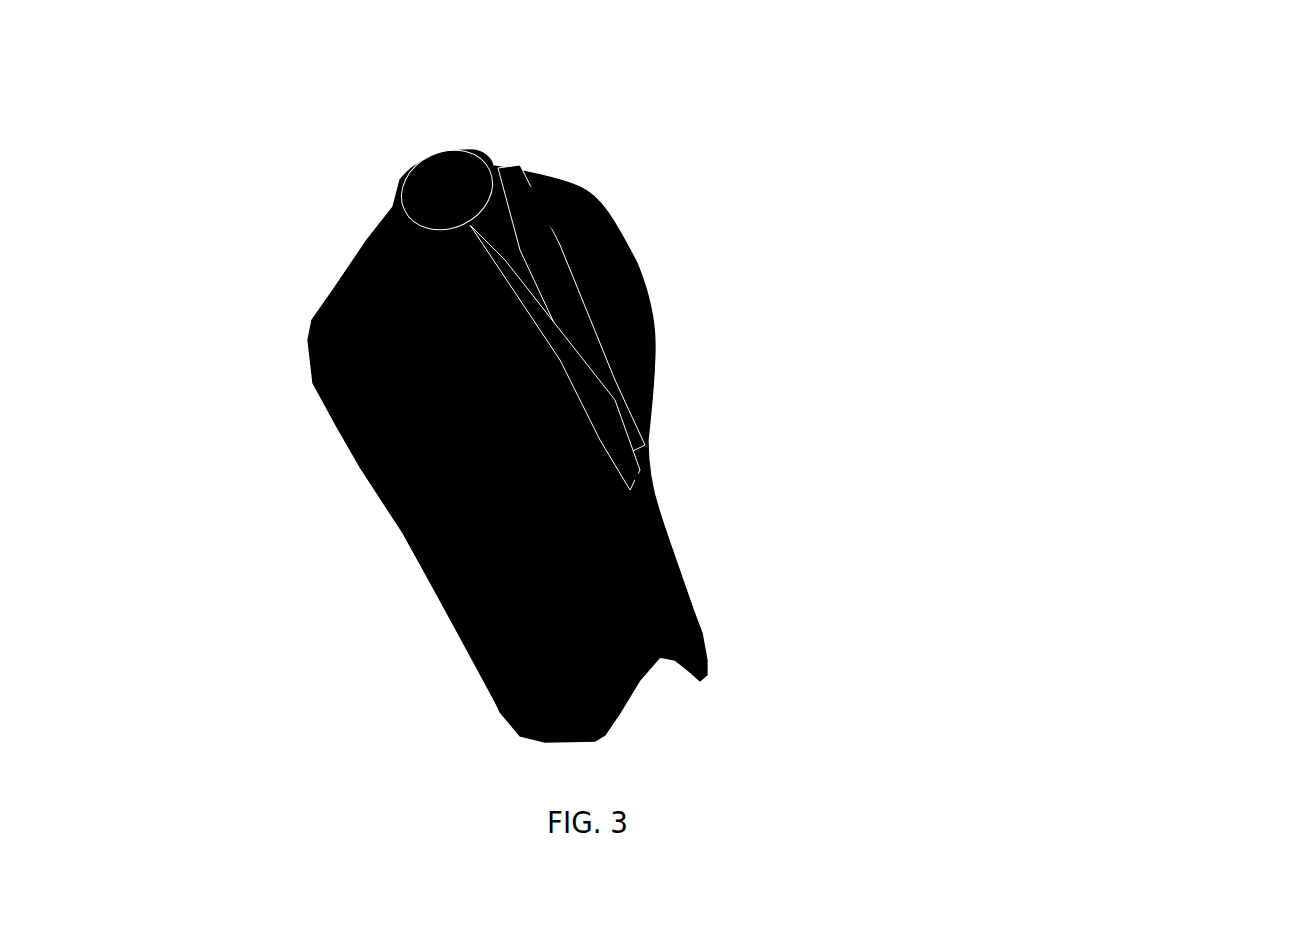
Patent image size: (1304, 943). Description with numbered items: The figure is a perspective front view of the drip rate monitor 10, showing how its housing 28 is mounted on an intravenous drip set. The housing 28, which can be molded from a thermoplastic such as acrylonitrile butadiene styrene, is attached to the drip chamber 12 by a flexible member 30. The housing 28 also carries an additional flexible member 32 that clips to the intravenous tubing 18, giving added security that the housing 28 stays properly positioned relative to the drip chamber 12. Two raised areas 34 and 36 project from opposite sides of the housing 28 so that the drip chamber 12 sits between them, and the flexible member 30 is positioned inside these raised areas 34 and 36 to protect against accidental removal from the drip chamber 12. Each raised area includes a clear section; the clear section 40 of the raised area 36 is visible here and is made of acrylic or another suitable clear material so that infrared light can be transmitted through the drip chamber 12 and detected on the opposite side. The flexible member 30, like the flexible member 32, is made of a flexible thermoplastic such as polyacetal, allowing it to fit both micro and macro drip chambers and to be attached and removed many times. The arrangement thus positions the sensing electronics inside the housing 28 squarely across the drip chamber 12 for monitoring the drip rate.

The drip rate monitor 10 is at (972, 670).
The drip chamber 12 is at (463, 153).
The intravenous tubing 18 is at (657, 577).
The housing 28 is at (623, 712).
The flexible member 30 is at (537, 193).
The flexible member 32 is at (700, 620).
The raised area 34 is at (357, 467).
The raised area 36 is at (630, 277).
The clear section 40 is at (608, 252).